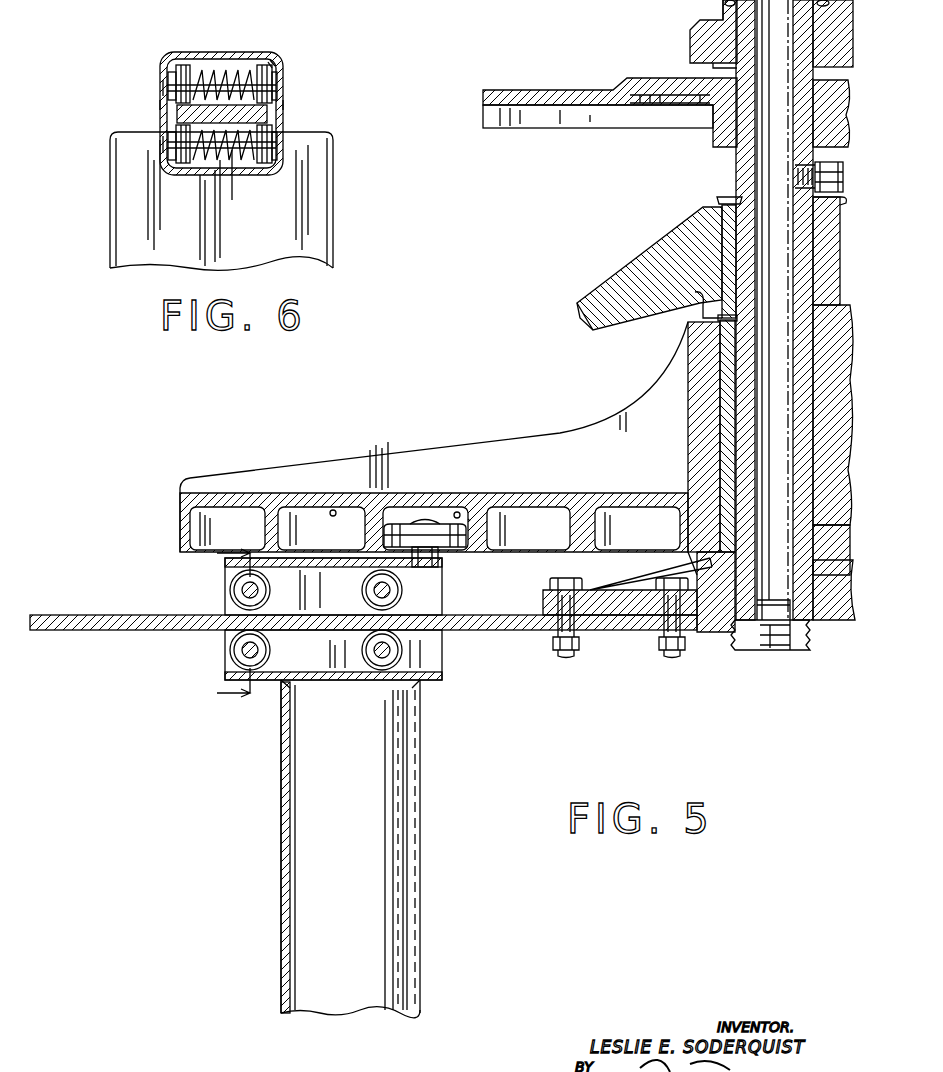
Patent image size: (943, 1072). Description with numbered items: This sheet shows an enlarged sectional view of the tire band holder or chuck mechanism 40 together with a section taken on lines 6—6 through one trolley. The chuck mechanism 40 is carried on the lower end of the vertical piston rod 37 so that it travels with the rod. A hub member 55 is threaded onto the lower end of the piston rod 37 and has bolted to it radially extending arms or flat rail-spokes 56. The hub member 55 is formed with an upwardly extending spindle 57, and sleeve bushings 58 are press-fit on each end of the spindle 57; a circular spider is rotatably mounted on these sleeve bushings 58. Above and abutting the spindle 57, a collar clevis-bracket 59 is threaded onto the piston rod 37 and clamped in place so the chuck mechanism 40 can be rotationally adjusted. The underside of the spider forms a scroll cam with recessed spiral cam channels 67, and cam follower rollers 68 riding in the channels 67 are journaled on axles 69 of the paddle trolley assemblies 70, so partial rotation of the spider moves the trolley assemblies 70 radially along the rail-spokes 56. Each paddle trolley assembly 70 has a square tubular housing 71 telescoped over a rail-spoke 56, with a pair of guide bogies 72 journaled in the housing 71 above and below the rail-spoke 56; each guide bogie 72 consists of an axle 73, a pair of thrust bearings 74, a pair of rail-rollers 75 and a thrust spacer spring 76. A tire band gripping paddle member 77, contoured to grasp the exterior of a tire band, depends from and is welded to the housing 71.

In FIG. 5, the piston rod 37 is at (738, 164).
In FIG. 5, the band holder or chuck mechanism 40 is at (361, 443).
In FIG. 5, the hub member 55 is at (716, 632).
In FIG. 6, the arms or flat rail-spokes 56 is at (270, 113).
In FIG. 5, the arms or flat rail-spokes 56 is at (502, 632).
In FIG. 5, the spindle 57 is at (722, 425).
In FIG. 5, the sleeve bushings 58 is at (719, 345).
In FIG. 5, the collar clevis-bracket 59 is at (684, 241).
In FIG. 5, the scroll cam channels 67 is at (334, 510).
In FIG. 5, the cam follower rollers 68 is at (471, 520).
In FIG. 5, the axles 69 is at (421, 522).
In FIG. 6, the paddle trolley assemblies 70 is at (158, 105).
In FIG. 5, the paddle trolley assemblies 70 is at (455, 594).
In FIG. 6, the square tubular housing 71 is at (240, 56).
In FIG. 5, the square tubular housing 71 is at (360, 683).
In FIG. 6, the guide bogies 72 is at (271, 63).
In FIG. 5, the guide bogies 72 is at (350, 594).
In FIG. 6, the axle 73 is at (166, 86).
In FIG. 6, the thrust bearings 74 is at (170, 73).
In FIG. 6, the rail-rollers 75 is at (183, 66).
In FIG. 6, the thrust spacer spring 76 is at (201, 85).
In FIG. 6, the tire band gripping paddle member 77 is at (313, 215).
In FIG. 5, the tire band gripping paddle member 77 is at (380, 783).
In FIG. 5, the section line 6- 6 is at (233, 625).